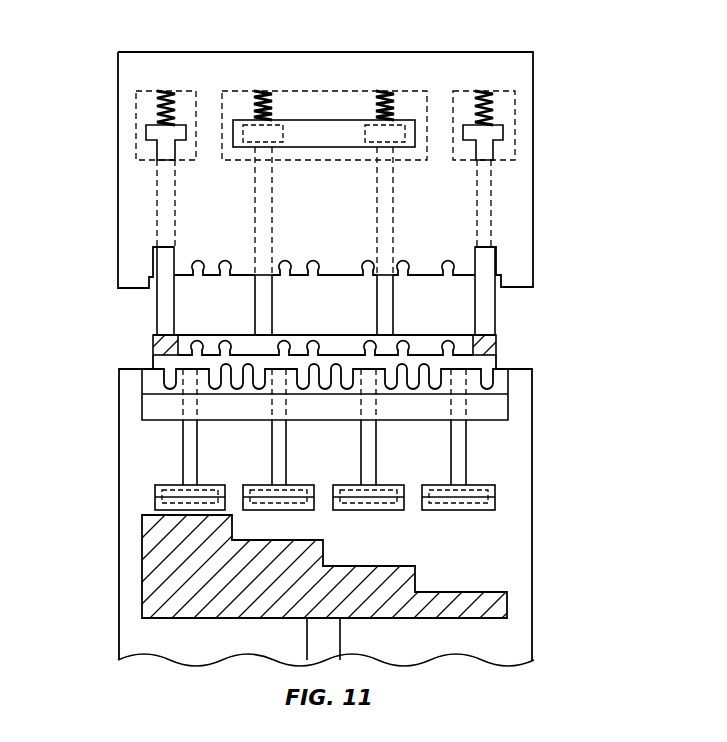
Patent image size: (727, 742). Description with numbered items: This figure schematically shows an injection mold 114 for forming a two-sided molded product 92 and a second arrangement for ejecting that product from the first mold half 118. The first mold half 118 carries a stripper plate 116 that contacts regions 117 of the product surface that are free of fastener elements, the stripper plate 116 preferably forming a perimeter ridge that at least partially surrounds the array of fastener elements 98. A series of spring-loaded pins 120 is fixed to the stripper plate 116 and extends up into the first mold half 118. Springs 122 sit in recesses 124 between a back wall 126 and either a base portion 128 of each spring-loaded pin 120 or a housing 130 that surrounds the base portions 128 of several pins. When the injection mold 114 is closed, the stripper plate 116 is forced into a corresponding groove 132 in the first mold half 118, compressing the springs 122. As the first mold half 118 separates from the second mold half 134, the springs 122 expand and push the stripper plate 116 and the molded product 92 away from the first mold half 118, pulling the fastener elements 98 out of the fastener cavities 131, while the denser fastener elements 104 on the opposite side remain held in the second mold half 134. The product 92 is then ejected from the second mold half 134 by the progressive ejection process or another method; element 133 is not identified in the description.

The injection mold 114 is at (568, 45).
The first mold half 118 is at (118, 175).
The spring-loaded pins 120 is at (493, 227).
The springs 122 is at (495, 110).
The recesses 124 is at (515, 155).
The back wall 126 is at (148, 92).
The base portion 128 is at (157, 125).
The housing 130 is at (348, 121).
The fastener cavities 131 is at (450, 265).
The groove 132 is at (153, 258).
The stripper plate 116 is at (243, 335).
The regions of the surface 117 is at (155, 345).
The fastener elements 98 is at (448, 340).
The two-sided molded product 92 is at (497, 362).
The fastener elements 104 is at (165, 381).
The support block 133 is at (490, 375).
The second mold half 134 is at (118, 468).